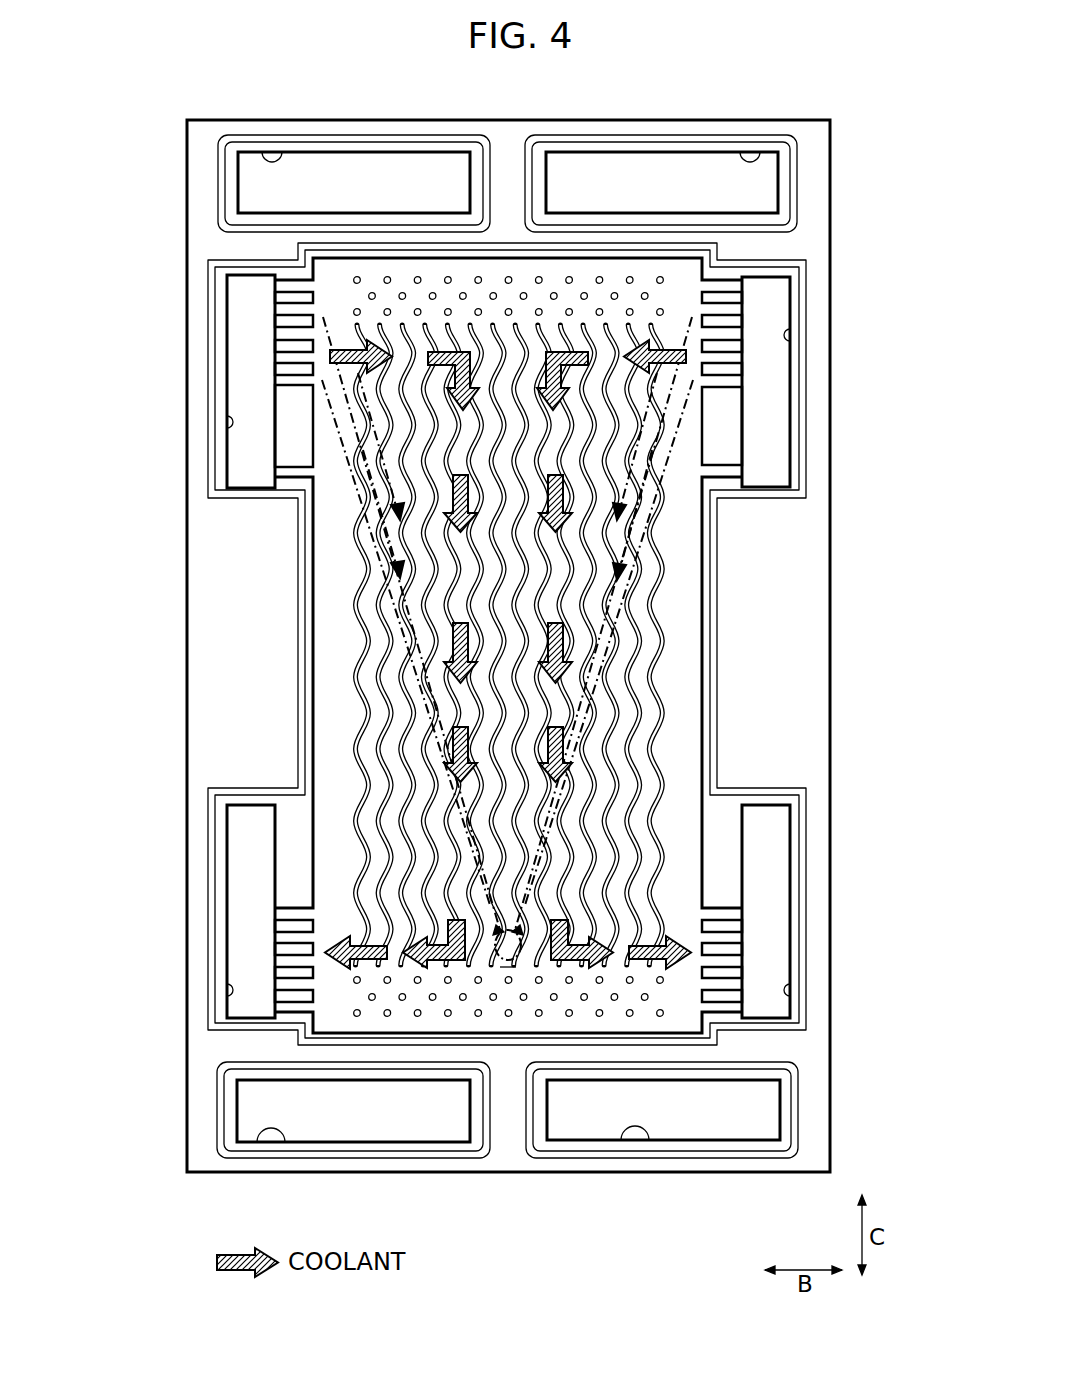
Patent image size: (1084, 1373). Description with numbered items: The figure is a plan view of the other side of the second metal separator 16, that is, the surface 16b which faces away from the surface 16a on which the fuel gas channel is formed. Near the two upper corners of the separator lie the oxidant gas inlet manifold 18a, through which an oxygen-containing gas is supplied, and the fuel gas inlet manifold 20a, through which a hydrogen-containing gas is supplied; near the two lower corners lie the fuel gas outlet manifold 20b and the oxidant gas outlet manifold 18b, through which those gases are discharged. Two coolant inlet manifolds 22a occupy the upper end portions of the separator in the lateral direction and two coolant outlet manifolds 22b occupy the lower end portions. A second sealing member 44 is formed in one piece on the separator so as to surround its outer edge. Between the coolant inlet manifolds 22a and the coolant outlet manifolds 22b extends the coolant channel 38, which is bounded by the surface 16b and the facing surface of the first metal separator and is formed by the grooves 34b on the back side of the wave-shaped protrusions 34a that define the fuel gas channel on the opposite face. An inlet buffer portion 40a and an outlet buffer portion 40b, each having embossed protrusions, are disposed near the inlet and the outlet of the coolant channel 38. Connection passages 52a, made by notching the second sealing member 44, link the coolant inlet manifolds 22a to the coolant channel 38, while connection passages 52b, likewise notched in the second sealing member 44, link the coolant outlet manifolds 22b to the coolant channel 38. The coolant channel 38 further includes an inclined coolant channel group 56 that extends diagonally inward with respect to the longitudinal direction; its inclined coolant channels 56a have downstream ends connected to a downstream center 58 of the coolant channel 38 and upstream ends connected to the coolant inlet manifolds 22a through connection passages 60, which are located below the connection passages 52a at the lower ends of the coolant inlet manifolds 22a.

The second metal separator 16 is at (590, 74).
The surface of the second metal separator 16a is at (710, 1163).
The surface of the second metal separator 16b is at (768, 1163).
The oxidant gas inlet manifold 18a is at (286, 156).
The oxidant gas outlet manifold 18b is at (630, 1143).
The fuel gas inlet manifold 20a is at (762, 158).
The fuel gas outlet manifold 20b is at (266, 1145).
The coolant inlet manifold 22a is at (225, 432).
The coolant outlet manifold 22b is at (225, 992).
The wave-shaped protrusion 34a is at (603, 660).
The groove 34b is at (597, 622).
The coolant channel 38 is at (626, 695).
The inlet buffer portion 40a is at (645, 296).
The outlet buffer portion 40b is at (447, 1016).
The second sealing member 44 is at (832, 190).
The connection passage 52a is at (296, 312).
The connection passage 52b is at (308, 982).
The inclined coolant channel group 56 is at (316, 405).
The inclined coolant channel 56a is at (335, 537).
The downstream center 58 is at (508, 980).
The connection passage 60 is at (300, 497).